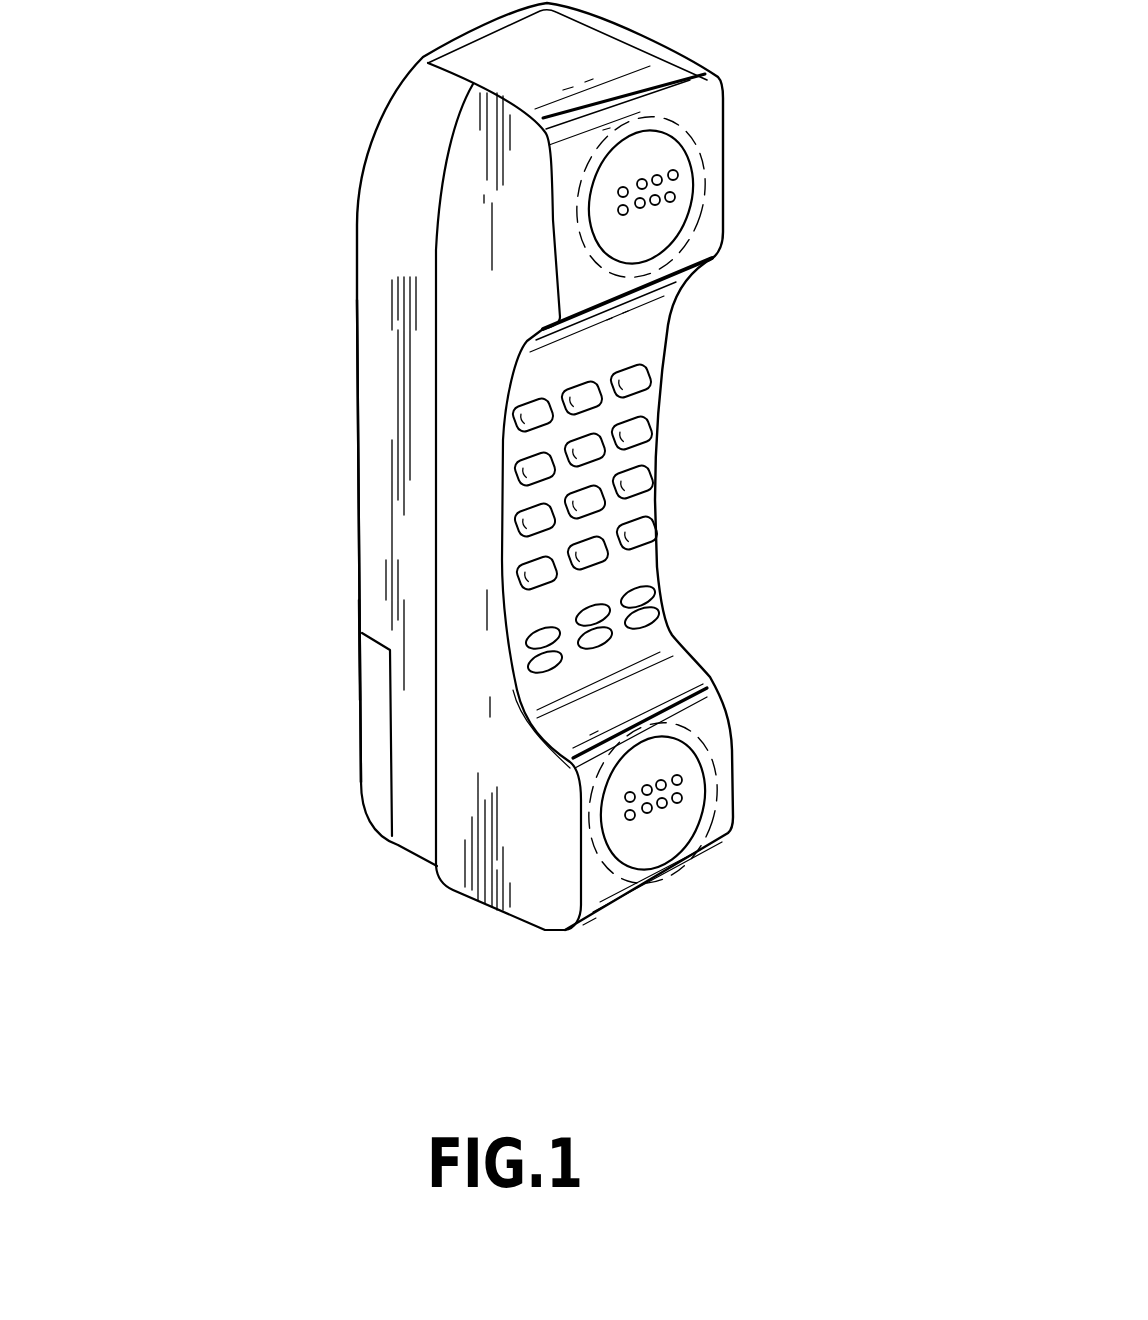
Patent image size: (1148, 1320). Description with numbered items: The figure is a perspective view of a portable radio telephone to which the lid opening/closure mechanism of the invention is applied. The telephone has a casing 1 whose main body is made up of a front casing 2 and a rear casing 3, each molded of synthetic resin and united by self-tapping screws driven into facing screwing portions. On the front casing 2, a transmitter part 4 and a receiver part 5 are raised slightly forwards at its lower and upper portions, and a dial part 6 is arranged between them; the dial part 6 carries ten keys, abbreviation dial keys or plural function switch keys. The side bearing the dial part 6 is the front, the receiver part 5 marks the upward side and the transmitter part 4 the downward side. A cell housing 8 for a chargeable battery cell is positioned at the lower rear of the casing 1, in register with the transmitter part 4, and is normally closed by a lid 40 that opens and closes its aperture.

The casing 1 is at (218, 203).
The front casing 2 is at (462, 262).
The rear casing 3 is at (368, 402).
The transmitter part 4 is at (710, 703).
The receiver part 5 is at (715, 197).
The dial part 6 is at (703, 610).
The cell housing 8 is at (336, 647).
The lid 40 is at (372, 768).